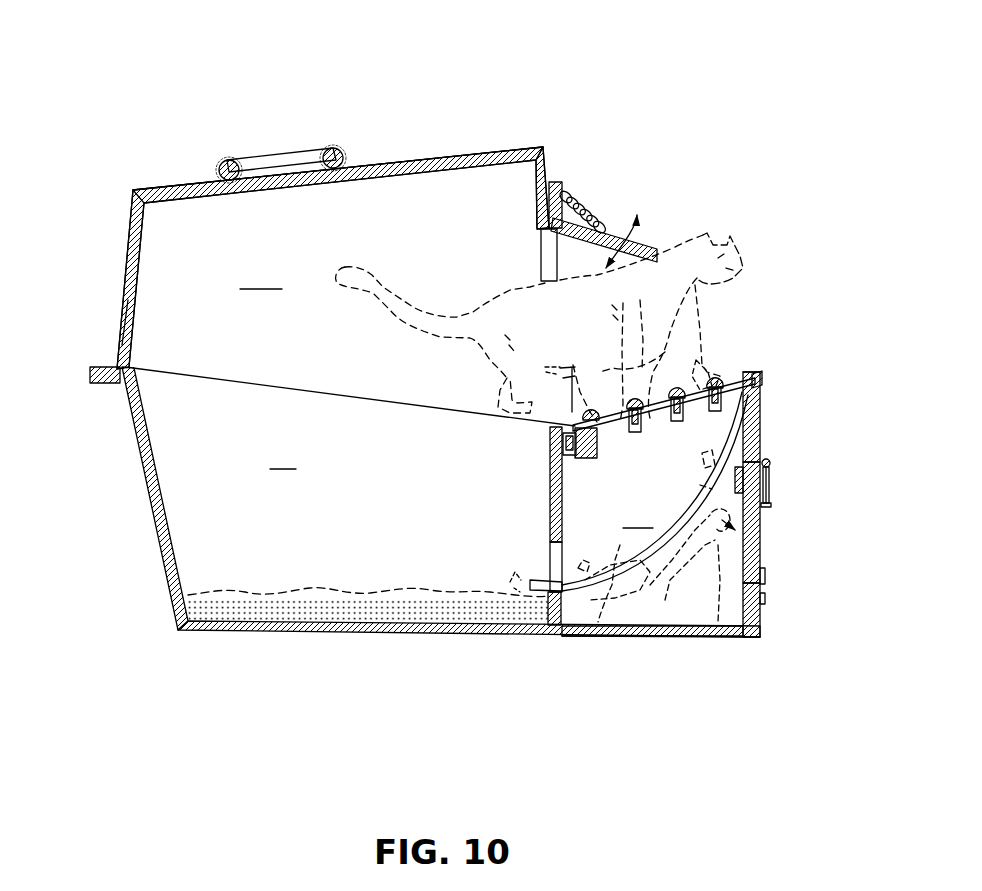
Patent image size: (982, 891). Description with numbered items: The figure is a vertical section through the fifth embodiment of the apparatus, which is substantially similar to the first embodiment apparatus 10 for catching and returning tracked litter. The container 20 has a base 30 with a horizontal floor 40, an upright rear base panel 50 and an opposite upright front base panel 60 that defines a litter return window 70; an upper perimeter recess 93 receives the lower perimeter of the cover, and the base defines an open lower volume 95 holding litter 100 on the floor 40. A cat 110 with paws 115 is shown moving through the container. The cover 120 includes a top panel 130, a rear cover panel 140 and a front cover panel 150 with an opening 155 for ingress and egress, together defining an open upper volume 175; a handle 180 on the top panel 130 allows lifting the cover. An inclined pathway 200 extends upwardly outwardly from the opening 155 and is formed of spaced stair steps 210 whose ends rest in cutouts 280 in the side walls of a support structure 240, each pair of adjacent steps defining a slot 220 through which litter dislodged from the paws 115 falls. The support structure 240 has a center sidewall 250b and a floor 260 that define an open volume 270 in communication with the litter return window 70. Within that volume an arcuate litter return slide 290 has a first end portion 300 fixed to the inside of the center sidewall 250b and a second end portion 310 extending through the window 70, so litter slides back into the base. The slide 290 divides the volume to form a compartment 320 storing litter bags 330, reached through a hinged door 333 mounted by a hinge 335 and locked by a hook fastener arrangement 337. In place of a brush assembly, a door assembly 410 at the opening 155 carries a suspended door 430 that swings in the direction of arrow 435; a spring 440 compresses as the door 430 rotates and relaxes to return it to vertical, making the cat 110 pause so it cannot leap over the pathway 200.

The first embodiment apparatus 10 is at (208, 72).
The container 20 is at (130, 222).
The base 30 is at (165, 578).
The floor 40 is at (192, 630).
The rear base panel 50 is at (148, 505).
The front base panel 60 is at (566, 492).
The litter return window 70 is at (562, 557).
The recess 93 is at (97, 384).
The open lower volume 95 is at (283, 460).
The litter 100 is at (312, 605).
The cat 110 is at (723, 250).
The paws 115 is at (705, 362).
The cover 120 is at (125, 242).
The top panel 130 is at (198, 188).
The rear cover panel 140 is at (119, 295).
The front cover panel 150 is at (550, 165).
The opening 155 is at (541, 270).
The open upper volume 175 is at (261, 280).
The handle 180 is at (305, 150).
The pathway 200 is at (733, 373).
The stair steps 210 is at (658, 438).
The slot 220 is at (604, 422).
The support structure 240 is at (703, 640).
The center sidewall 250b is at (764, 628).
The floor 260 is at (602, 624).
The open volume 270 is at (638, 519).
The cutouts 280 is at (623, 447).
The litter return slide 290 is at (741, 444).
The first end portion 300 is at (745, 418).
The second end portion 310 is at (537, 580).
The compartment 320 is at (566, 610).
The litter bags 330 is at (668, 610).
The hinged door 333 is at (754, 523).
The hinge 335 is at (766, 575).
The hook fastener arrangement 337 is at (770, 463).
The door assembly 410 is at (560, 178).
The door 430 is at (612, 236).
The arrow 435 is at (650, 218).
The spring 440 is at (590, 204).